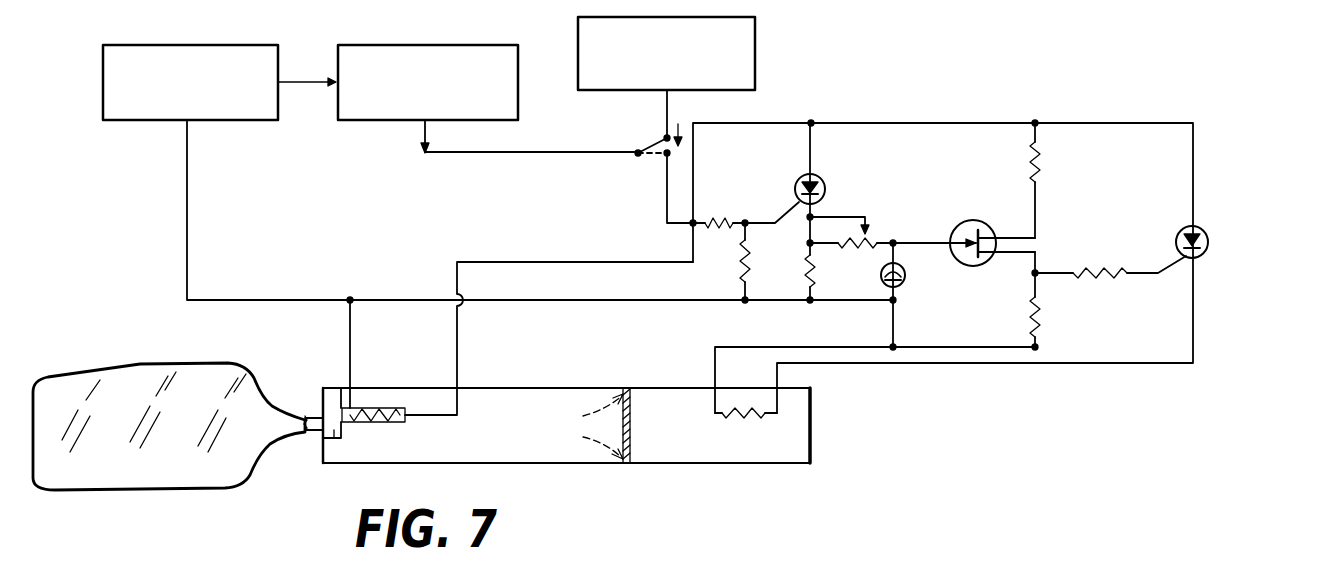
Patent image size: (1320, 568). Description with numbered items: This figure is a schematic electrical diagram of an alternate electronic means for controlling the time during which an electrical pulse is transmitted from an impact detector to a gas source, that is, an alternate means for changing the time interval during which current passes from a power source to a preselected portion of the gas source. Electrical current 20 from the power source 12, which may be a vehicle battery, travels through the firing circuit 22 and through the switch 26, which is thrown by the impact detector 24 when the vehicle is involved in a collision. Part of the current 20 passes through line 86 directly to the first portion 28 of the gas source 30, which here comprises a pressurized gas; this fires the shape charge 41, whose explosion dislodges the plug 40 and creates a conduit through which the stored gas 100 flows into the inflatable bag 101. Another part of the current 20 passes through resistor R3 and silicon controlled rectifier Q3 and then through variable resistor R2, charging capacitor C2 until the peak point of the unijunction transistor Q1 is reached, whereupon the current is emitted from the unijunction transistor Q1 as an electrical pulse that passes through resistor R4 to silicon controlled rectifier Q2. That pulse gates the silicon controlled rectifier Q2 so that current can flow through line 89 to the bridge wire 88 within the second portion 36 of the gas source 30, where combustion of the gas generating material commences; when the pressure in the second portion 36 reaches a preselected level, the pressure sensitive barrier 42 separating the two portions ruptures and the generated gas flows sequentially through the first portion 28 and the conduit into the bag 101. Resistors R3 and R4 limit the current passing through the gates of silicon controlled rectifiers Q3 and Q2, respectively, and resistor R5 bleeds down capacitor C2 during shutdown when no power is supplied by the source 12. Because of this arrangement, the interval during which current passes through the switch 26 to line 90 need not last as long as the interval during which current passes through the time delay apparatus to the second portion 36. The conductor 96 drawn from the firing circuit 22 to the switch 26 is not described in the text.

The power source 12 is at (140, 122).
The electrical current 20 is at (312, 86).
The firing circuit 22 is at (386, 122).
The impact detector 24 is at (757, 62).
The switch 26 is at (646, 146).
The first portion of gas source 28 is at (561, 388).
The gas source 30 is at (310, 481).
The second portion of gas source 36 is at (812, 441).
The plug 40 is at (337, 440).
The shape charge 41 is at (333, 392).
The pressure sensitive barrier 42 is at (632, 450).
The line 86 is at (558, 262).
The bridge wire 88 is at (795, 405).
The line 89 is at (961, 122).
The line 90 is at (665, 197).
The firing circuit output conductor 96 is at (516, 156).
The stored gas 100 is at (573, 447).
The inflatable bag 101 is at (132, 498).
The variable resistor R2 is at (870, 238).
The resistor R3 is at (708, 217).
The resistor R4 is at (1088, 270).
The resistor R5 is at (815, 274).
The unijunction transistor Q1 is at (955, 232).
The silicon controlled rectifier Q2 is at (1209, 242).
The silicon controlled rectifier Q3 is at (827, 189).
The capacitor C2 is at (906, 278).